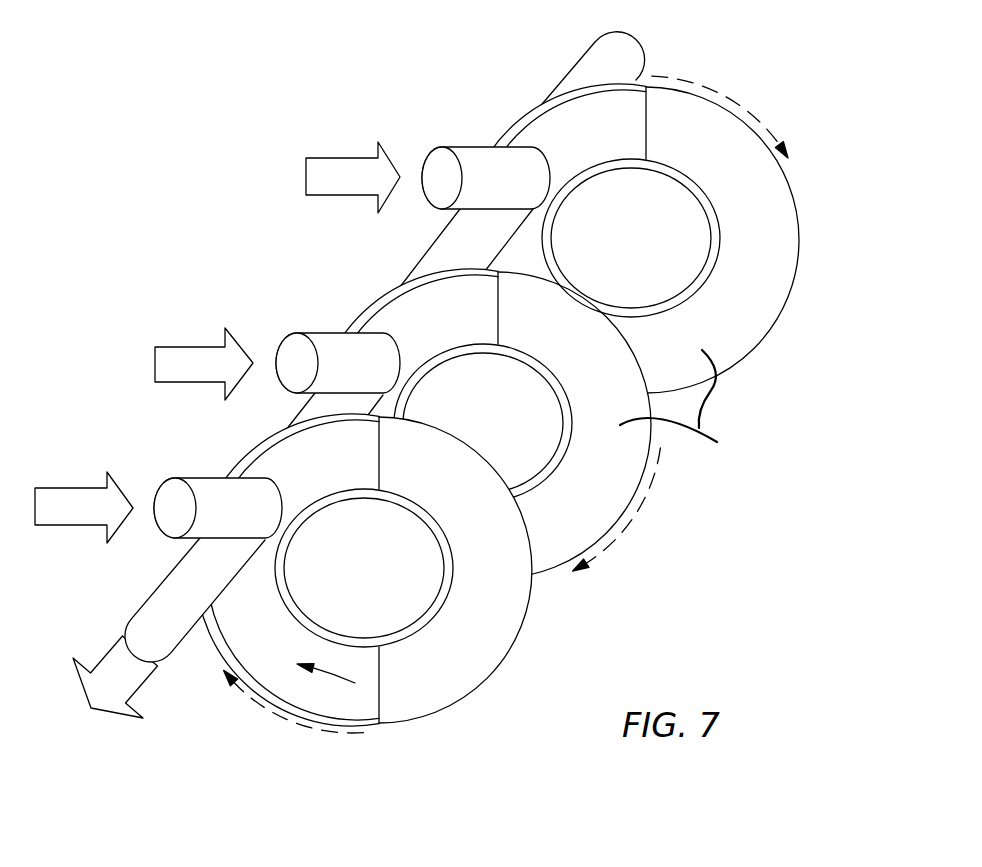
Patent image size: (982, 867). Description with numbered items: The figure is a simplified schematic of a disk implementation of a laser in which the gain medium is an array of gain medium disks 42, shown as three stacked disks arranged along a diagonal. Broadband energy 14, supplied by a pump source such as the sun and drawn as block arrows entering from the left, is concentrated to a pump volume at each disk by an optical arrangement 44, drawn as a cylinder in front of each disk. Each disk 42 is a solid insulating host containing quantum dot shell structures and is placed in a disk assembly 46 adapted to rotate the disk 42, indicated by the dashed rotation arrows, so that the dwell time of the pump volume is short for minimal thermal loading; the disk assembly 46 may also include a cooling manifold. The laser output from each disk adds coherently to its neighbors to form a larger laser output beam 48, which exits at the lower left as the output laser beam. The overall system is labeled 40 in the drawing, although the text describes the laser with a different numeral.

The laser amplifier system 40 is at (322, 82).
The broadband energy 14 is at (316, 177).
The optical arrangement 44 is at (296, 356).
The gain medium disk 42 is at (300, 457).
The disk assembly 46 is at (681, 405).
The laser output beam 48 is at (113, 693).